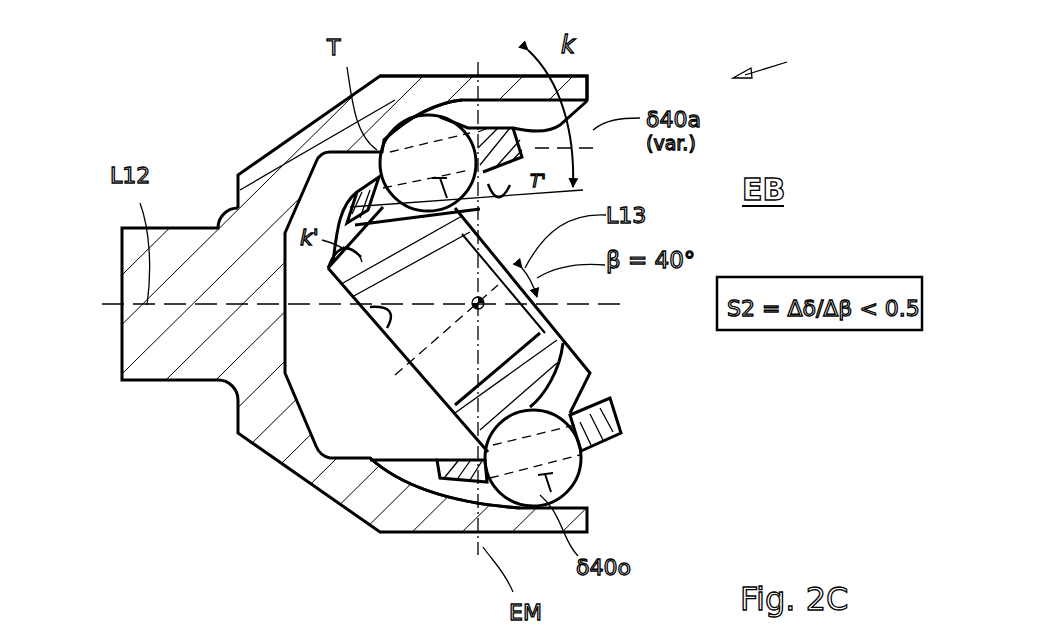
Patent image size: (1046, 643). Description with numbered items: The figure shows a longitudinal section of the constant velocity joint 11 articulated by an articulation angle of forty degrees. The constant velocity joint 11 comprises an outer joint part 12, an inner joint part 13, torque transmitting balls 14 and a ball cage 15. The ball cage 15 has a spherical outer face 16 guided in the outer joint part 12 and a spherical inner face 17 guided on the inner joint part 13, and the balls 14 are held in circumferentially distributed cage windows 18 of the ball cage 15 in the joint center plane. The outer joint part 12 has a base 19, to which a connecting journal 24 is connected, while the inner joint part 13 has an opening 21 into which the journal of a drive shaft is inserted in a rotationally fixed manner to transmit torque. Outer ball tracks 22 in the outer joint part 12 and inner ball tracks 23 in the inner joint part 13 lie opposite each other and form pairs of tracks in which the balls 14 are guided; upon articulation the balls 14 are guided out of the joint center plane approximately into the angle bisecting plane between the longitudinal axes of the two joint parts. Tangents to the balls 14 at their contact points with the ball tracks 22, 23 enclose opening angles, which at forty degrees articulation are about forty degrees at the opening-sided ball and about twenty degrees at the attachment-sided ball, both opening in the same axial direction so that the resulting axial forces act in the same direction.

The constant velocity joint 11 is at (779, 61).
The outer joint part 12 is at (380, 70).
The inner joint part 13 is at (552, 345).
The torque transmitting balls 14 is at (445, 100).
The ball cage 15 is at (607, 417).
The spherical outer face 16 is at (358, 170).
The spherical inner face 17 is at (432, 452).
The cage windows 18 is at (583, 463).
The base 19 is at (270, 160).
The opening 21 is at (385, 320).
The outer ball tracks 22 is at (467, 112).
The inner ball tracks 23 is at (592, 374).
The connecting journal 24 is at (172, 352).